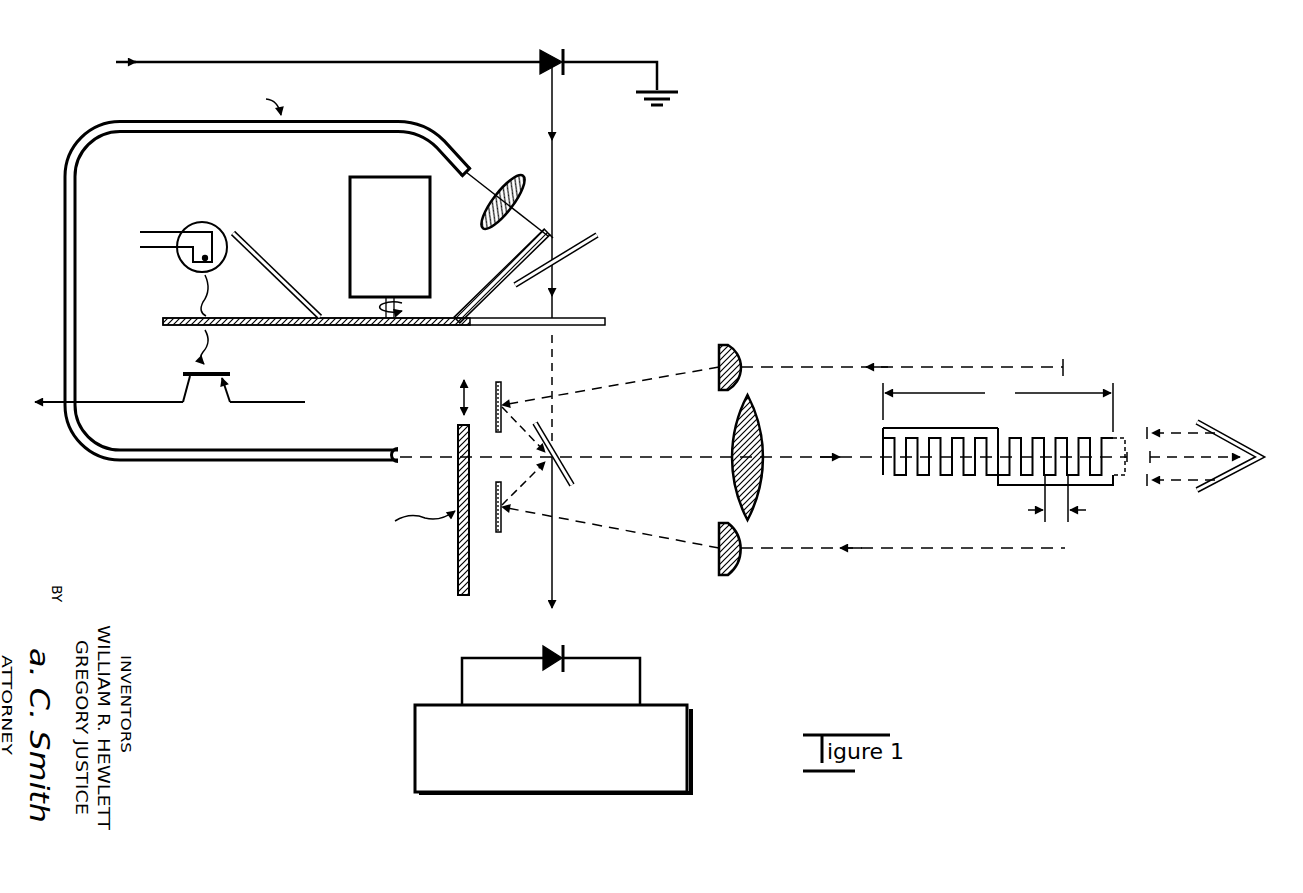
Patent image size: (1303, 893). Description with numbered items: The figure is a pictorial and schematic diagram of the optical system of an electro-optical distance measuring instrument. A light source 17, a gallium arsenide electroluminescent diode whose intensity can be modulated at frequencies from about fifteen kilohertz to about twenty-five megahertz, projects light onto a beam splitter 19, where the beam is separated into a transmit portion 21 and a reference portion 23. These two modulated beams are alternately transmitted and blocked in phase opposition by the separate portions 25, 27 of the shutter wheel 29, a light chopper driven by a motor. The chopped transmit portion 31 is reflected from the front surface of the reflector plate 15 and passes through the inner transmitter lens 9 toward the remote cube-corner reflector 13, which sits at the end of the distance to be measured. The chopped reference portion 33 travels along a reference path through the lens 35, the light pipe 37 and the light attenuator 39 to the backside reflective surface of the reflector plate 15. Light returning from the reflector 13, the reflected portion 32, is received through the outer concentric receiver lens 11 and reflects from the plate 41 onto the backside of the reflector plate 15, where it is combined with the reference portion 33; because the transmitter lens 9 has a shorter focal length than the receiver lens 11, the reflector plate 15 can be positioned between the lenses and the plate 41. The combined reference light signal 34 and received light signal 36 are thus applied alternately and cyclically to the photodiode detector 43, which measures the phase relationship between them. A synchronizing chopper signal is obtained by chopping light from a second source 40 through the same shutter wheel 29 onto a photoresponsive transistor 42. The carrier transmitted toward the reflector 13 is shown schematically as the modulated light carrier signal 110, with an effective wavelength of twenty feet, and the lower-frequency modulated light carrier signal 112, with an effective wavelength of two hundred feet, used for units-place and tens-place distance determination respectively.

The transmitter lens 9 is at (760, 416).
The receiver lens 11 is at (735, 346).
The cube-corner reflector 13 is at (1211, 419).
The reflector plate 15 is at (574, 482).
The light source 17 is at (548, 47).
The beam splitter 19 is at (598, 226).
The transmit portion 21 is at (557, 291).
The reference portion 23 is at (556, 242).
The shutter wheel portion 25 is at (495, 284).
The shutter wheel portion 27 is at (530, 328).
The shutter wheel 29 is at (396, 326).
The chopped transmit portion 31 is at (555, 368).
The reflected portion 32 is at (879, 366).
The chopped reference portion 33 is at (514, 231).
The reference light signal 34 is at (435, 456).
The lens 35 is at (480, 208).
The received light signal 36 is at (530, 477).
The light pipe 37 is at (327, 118).
The light attenuator 39 is at (470, 587).
The light source 40 is at (204, 223).
The plate 41 is at (509, 380).
The photoresponsive transistor 42 is at (190, 380).
The light signal detector 43 is at (566, 656).
The modulated light carrier signal 110 is at (1118, 539).
The modulated light carrier signal 112 is at (938, 423).